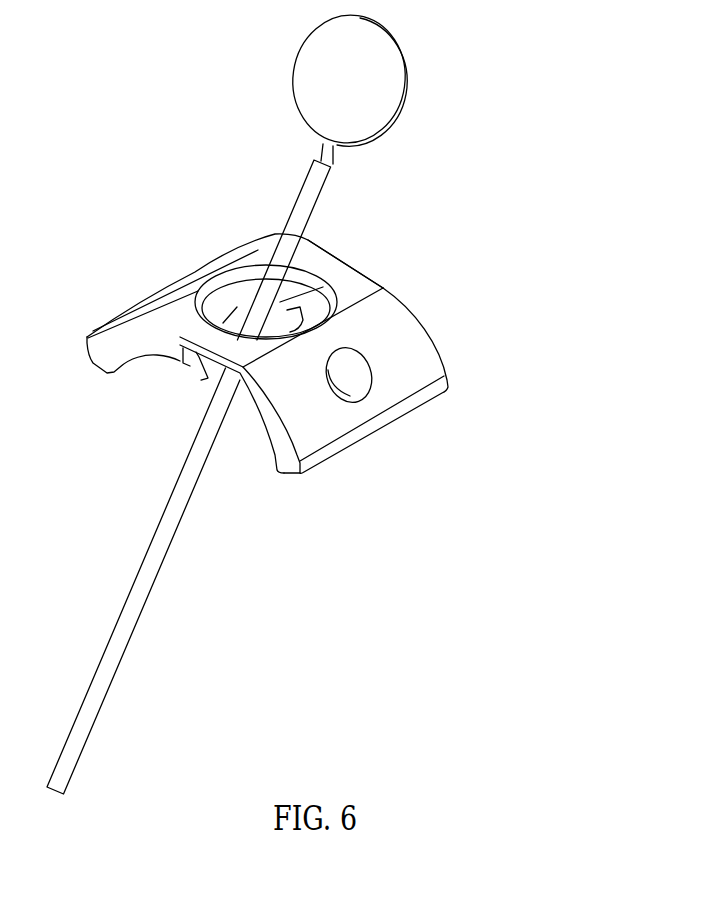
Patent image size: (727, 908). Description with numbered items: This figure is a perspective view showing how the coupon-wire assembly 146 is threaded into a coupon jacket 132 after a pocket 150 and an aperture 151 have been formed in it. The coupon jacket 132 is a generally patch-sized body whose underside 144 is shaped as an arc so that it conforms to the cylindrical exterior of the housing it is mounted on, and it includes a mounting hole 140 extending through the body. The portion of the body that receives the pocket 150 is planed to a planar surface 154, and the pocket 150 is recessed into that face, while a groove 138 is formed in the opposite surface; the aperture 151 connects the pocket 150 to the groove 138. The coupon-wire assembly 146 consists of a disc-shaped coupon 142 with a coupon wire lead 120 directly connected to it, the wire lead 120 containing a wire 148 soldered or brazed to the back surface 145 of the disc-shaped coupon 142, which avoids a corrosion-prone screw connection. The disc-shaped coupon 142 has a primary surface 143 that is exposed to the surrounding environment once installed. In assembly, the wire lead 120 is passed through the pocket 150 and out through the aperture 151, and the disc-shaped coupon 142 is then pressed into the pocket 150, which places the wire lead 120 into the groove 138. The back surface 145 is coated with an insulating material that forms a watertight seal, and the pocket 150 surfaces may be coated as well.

The coupon wire lead 120 is at (300, 210).
The coupon jacket 132 is at (313, 419).
The groove 138 is at (192, 363).
The mounting hole 140 is at (363, 367).
The disc-shaped coupon 142 is at (330, 58).
The primary surface 143 is at (372, 95).
The underside 144 is at (118, 367).
The back surface 145 is at (416, 70).
The coupon-wire assembly 146 is at (470, 128).
The wire 148 is at (333, 152).
The pocket 150 is at (232, 278).
The aperture 151 is at (243, 308).
The planar surface 154 is at (357, 285).